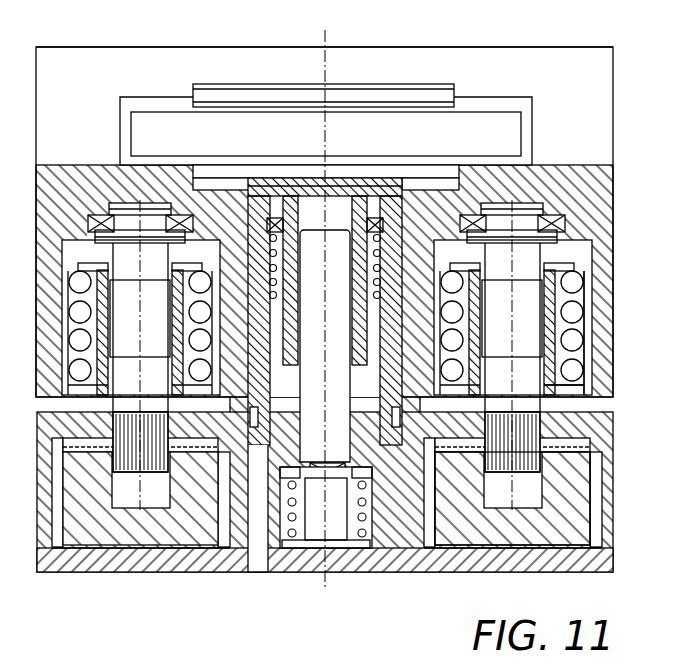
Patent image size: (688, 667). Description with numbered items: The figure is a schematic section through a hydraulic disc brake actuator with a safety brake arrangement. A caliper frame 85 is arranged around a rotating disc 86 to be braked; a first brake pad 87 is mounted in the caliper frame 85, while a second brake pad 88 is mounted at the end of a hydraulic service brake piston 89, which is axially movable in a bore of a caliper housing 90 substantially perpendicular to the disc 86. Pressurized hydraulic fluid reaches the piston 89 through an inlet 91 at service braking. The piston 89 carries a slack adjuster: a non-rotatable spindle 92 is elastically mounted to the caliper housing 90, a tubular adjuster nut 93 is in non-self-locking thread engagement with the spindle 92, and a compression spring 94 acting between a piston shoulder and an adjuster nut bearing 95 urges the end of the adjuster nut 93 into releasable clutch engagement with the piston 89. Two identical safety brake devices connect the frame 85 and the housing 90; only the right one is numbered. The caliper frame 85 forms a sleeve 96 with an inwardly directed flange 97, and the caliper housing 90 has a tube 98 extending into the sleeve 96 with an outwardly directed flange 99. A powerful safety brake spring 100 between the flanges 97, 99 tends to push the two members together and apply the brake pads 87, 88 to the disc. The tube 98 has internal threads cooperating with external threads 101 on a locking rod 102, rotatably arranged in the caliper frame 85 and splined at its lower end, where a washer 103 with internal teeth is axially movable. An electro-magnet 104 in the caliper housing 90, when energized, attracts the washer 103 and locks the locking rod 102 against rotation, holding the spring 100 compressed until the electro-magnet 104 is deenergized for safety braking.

The caliper frame 85 is at (128, 82).
The rotating disc 86 is at (170, 122).
The first brake pad 87 is at (343, 100).
The second brake pad 88 is at (372, 178).
The hydraulic service brake piston 89 is at (392, 198).
The caliper housing 90 is at (598, 432).
The inlet 91 is at (257, 576).
The spindle 92 is at (332, 450).
The adjuster nut 93 is at (356, 375).
The compression spring 94 is at (252, 182).
The adjuster nut bearing 95 is at (278, 192).
The sleeve 96 is at (605, 272).
The inwardly directed flange 97 is at (582, 400).
The tube 98 is at (573, 262).
The outwardly directed flange 99 is at (597, 236).
The safety brake spring 100 is at (575, 350).
The external threads 101 is at (600, 305).
The locking rod 102 is at (600, 200).
The washer 103 is at (580, 455).
The electro-magnet 104 is at (578, 508).